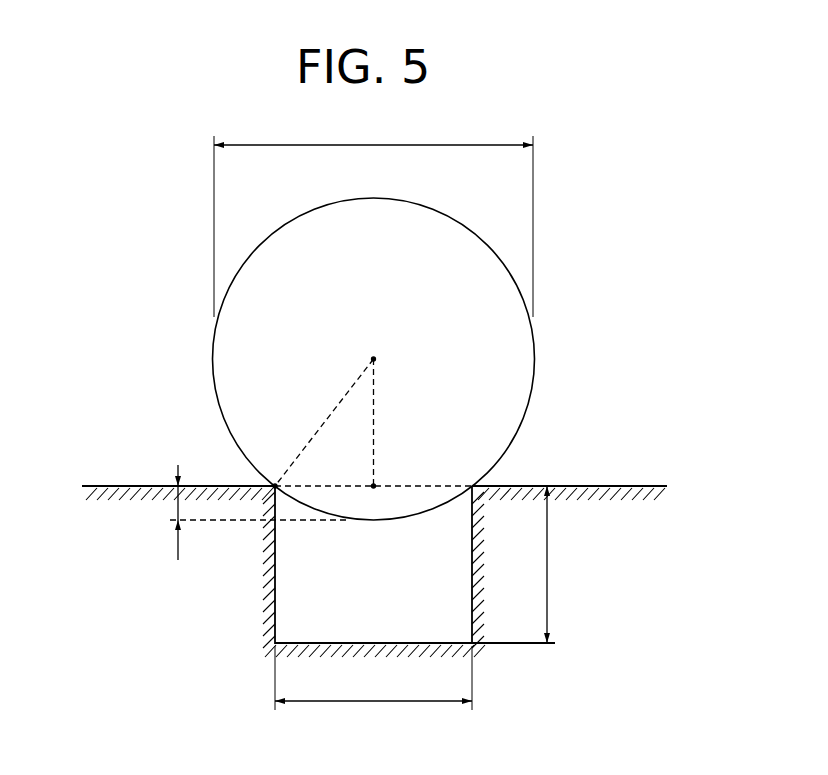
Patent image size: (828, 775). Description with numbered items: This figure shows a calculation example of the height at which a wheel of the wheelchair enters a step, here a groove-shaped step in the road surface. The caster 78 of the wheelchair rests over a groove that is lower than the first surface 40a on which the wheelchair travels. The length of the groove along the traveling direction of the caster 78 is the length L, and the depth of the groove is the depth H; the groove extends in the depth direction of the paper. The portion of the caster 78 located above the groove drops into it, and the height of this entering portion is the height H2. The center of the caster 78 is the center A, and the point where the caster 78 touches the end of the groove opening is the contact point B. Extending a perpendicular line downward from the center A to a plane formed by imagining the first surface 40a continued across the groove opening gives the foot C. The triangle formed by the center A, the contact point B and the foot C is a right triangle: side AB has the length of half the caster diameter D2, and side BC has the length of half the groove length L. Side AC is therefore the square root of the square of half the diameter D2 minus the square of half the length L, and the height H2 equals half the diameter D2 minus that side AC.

The caster 78 is at (213, 362).
The first surface 40a is at (578, 484).
The center of the caster A is at (326, 410).
The contact point B is at (269, 476).
The foot of the perpendicular line C is at (382, 477).
The caster diameter D2 is at (373, 219).
The height of the portion entering the groove H2 is at (244, 512).
The depth of the groove H is at (563, 564).
The length of the groove L is at (373, 688).